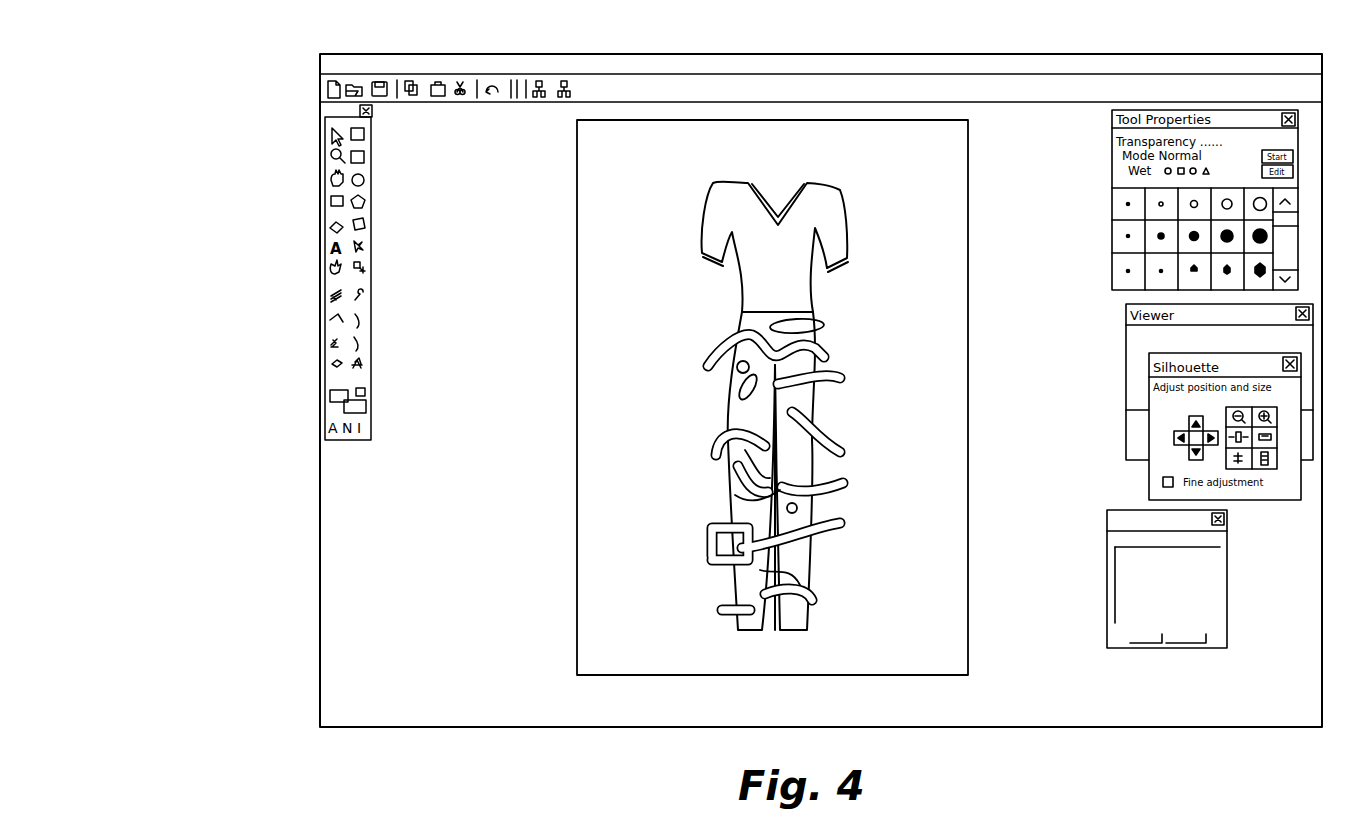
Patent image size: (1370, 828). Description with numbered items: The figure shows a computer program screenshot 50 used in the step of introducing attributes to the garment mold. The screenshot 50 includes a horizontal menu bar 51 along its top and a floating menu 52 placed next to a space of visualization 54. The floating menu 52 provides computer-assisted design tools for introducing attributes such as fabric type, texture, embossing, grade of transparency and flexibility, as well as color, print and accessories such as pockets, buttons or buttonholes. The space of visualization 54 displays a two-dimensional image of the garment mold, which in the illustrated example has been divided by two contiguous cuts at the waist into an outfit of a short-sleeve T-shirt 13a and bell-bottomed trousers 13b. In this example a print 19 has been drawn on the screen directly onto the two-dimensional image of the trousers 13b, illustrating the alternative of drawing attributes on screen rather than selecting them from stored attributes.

The screenshot 50 is at (480, 725).
The horizontal menu bar 51 is at (318, 88).
The floating menu 52 is at (1242, 582).
The canvas / drawing area 54 is at (605, 593).
The short-sleeve T-shirt 13a is at (757, 260).
The bell-bottomed trousers 13b is at (823, 385).
The print 19 is at (740, 575).